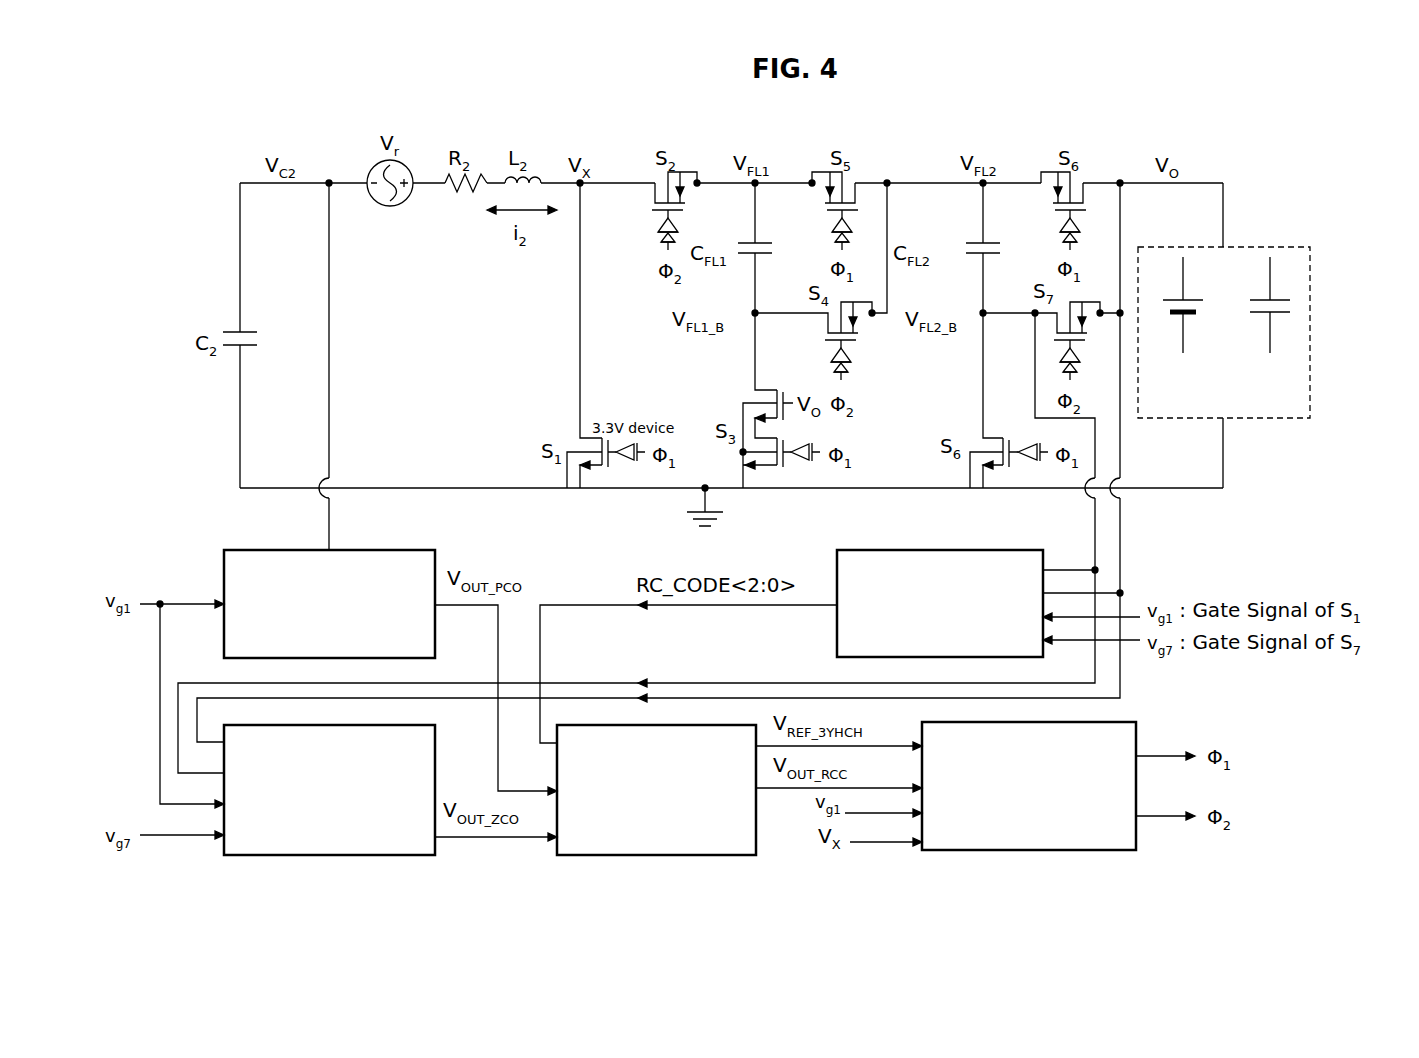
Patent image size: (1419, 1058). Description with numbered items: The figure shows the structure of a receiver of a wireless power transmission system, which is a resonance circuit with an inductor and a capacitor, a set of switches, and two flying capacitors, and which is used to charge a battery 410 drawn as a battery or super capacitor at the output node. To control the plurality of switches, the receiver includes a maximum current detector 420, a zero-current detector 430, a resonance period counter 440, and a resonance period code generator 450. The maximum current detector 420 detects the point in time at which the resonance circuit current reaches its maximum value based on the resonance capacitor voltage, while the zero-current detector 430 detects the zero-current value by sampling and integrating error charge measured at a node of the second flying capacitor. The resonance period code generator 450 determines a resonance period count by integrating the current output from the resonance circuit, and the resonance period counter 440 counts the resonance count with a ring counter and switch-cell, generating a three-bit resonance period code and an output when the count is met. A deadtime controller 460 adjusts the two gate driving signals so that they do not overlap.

The battery 410 is at (1255, 247).
The maximum current detector 420 is at (365, 550).
The zero-current detector 430 is at (365, 855).
The resonance period counter 440 is at (685, 855).
The resonance period code generator 450 is at (975, 550).
The deadtime controller 460 is at (1067, 850).